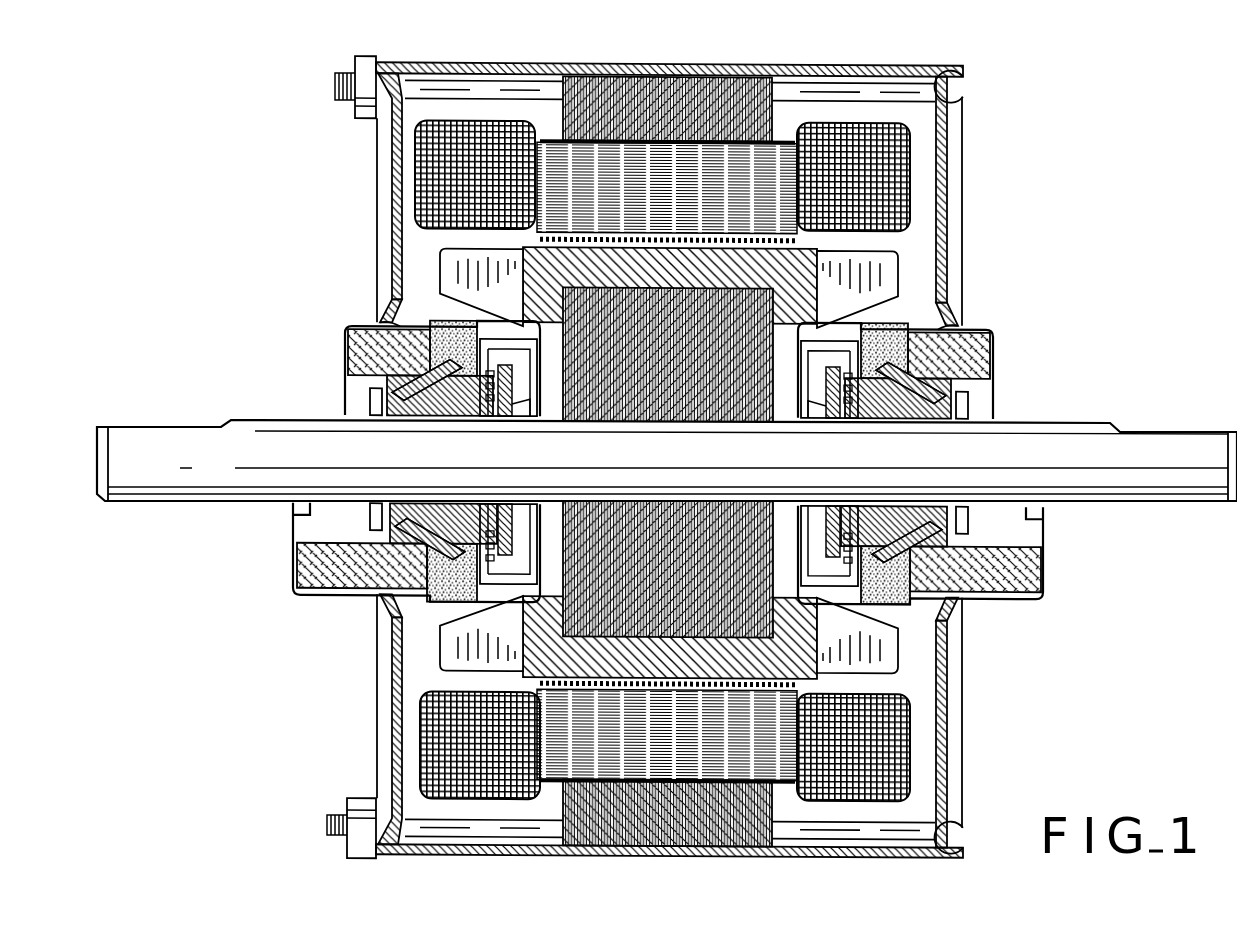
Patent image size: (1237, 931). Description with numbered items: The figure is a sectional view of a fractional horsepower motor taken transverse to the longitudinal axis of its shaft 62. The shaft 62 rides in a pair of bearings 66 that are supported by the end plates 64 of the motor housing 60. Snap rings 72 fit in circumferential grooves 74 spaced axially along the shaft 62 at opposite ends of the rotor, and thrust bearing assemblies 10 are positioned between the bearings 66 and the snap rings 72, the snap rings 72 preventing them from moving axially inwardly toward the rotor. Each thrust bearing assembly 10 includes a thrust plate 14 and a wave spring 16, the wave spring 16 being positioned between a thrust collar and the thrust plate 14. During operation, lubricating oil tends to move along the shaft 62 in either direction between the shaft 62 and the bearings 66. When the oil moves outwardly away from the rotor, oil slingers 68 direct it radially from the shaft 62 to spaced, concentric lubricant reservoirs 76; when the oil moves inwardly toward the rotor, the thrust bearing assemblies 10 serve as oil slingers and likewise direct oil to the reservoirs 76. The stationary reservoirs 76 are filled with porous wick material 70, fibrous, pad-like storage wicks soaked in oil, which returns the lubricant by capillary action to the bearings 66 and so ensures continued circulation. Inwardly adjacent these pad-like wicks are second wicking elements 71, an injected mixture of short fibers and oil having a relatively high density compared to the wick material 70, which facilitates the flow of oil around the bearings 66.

The thrust bearing assembly 10 is at (550, 535).
The thrust plate 14 is at (503, 405).
The wave spring 16 is at (490, 408).
The motor housing 60 is at (930, 62).
The shaft 62 is at (1147, 427).
The end plate 64 is at (390, 174).
The bearing 66 is at (447, 418).
The oil slinger 68 is at (970, 404).
The wick material 70 is at (348, 339).
The wicking element 71 is at (455, 322).
The snap ring 72 is at (540, 413).
The circumferential groove 74 is at (536, 428).
The lubricant reservoir 76 is at (988, 336).